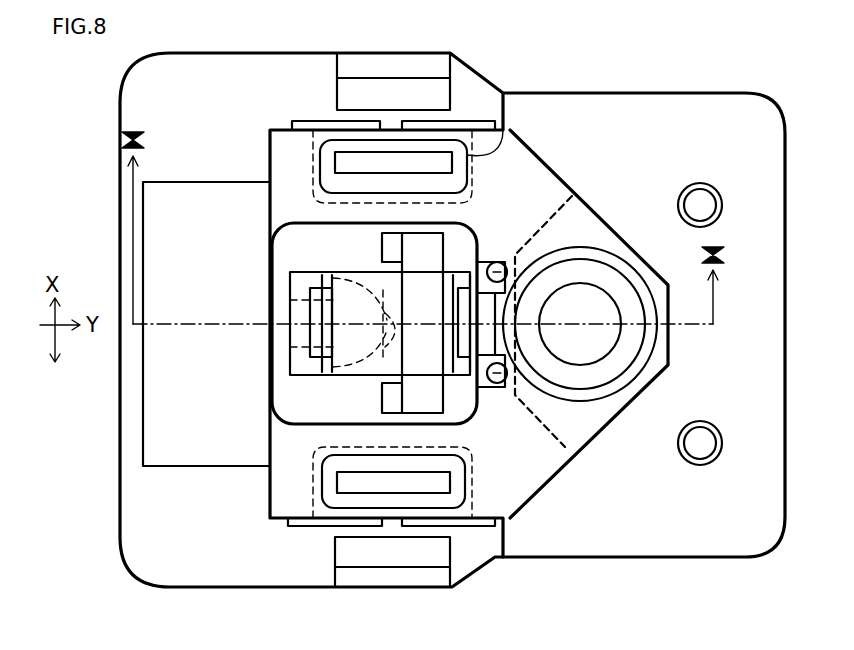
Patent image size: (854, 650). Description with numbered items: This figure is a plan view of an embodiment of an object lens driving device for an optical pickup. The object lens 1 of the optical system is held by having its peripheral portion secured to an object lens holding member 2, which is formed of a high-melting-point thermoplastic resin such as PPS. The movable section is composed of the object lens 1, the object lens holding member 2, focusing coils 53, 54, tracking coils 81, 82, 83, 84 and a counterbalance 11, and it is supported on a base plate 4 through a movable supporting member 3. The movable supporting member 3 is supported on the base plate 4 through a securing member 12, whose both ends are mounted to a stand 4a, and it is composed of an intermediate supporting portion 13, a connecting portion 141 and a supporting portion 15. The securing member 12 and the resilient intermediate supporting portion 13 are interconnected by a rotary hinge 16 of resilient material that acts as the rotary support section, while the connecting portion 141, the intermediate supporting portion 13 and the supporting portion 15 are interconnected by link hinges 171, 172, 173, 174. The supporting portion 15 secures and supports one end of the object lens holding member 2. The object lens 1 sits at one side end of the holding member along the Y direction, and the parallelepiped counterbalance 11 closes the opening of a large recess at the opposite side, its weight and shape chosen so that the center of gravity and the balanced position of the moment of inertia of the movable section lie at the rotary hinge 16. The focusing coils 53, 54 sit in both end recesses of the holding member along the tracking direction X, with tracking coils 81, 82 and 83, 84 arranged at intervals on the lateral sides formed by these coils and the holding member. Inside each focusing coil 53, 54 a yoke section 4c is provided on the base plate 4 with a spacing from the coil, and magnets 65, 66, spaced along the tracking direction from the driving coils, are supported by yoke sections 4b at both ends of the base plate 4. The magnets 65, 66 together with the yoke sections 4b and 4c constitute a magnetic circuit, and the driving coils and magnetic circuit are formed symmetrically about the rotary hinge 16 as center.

The object lens 1 is at (587, 303).
The object lens holding member 2 is at (450, 227).
The movable supporting member 3 is at (285, 341).
The base plate 4 is at (690, 542).
The stand 4a is at (388, 253).
The yoke section 4b is at (350, 65).
The yoke section 4c is at (313, 122).
The counterbalance 11 is at (162, 353).
The securing member 12 is at (530, 175).
The intermediate supporting portion 13 is at (300, 343).
The supporting portion 15 is at (527, 232).
The rotary hinge 16 is at (290, 302).
The focusing coil 53 is at (503, 93).
The focusing coil 54 is at (467, 487).
The magnet 65 is at (383, 93).
The magnet 66 is at (410, 550).
The tracking coil 81 is at (333, 167).
The tracking coil 82 is at (468, 121).
The tracking coil 83 is at (307, 527).
The tracking coil 84 is at (467, 527).
The connecting portion 141 is at (430, 350).
The link hinge 171 is at (288, 372).
The link hinge 172 is at (458, 390).
The link hinge 173 is at (308, 282).
The link hinge 174 is at (490, 305).